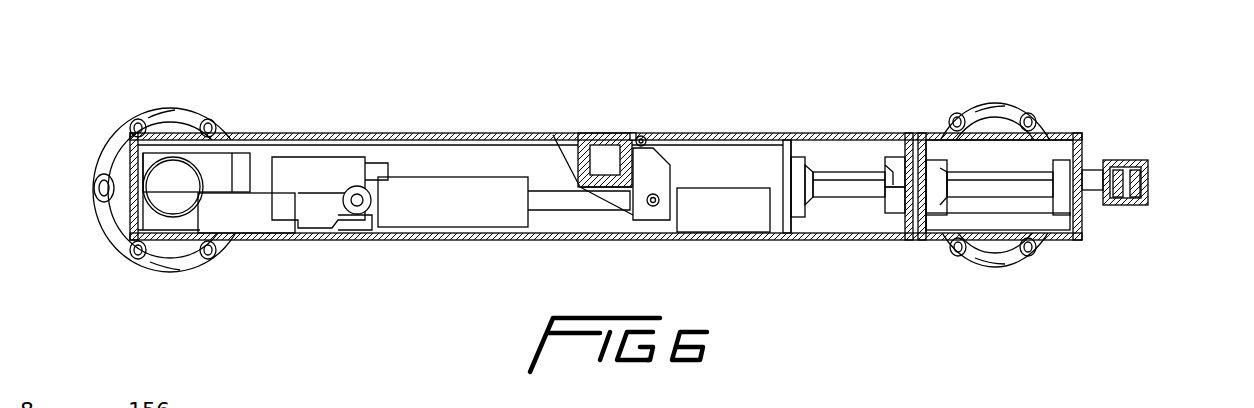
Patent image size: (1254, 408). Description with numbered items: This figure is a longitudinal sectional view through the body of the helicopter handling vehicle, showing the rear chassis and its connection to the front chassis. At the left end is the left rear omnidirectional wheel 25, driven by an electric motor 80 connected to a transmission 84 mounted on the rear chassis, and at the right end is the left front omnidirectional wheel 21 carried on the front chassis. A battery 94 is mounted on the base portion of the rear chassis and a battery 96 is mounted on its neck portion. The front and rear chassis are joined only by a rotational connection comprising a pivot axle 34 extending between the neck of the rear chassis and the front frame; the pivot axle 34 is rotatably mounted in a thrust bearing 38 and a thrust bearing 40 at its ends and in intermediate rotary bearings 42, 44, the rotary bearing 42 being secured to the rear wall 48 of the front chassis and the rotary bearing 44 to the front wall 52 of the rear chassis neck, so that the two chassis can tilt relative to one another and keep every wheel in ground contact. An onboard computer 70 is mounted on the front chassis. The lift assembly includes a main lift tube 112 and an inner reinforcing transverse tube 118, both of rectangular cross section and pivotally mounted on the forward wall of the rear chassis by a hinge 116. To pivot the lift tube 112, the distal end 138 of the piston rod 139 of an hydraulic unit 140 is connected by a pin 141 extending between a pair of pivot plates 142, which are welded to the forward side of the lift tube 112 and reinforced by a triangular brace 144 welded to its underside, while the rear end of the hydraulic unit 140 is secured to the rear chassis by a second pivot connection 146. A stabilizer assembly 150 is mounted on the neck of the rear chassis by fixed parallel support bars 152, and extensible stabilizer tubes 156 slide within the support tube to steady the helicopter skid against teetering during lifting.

The omnidirectional wheel 21 is at (1035, 102).
The omnidirectional wheel 25 is at (189, 101).
The pivot axle 34 is at (853, 215).
The thrust bearing 38 is at (1057, 168).
The thrust bearing 40 is at (808, 240).
The rotary bearing 42 is at (940, 240).
The rotary bearing 44 is at (897, 240).
The rear wall 48 is at (933, 137).
The front wall 52 is at (893, 137).
The onboard computer 70 is at (1062, 240).
The electric motor 80 is at (342, 157).
The transmission 84 is at (260, 158).
The battery 94 is at (282, 223).
The battery 96 is at (757, 240).
The main lift tube 112 is at (624, 134).
The hinge 116 is at (646, 136).
The inner reinforcing transverse tube 118 is at (600, 137).
The distal end 138 is at (656, 208).
The piston rod 139 is at (555, 137).
The hydraulic unit 140 is at (427, 177).
The pin 141 is at (673, 187).
The pivot plate 142 is at (660, 152).
The triangular brace 144 is at (608, 217).
The second pivot connection 146 is at (358, 220).
The stabilizer assembly 150 is at (1129, 210).
The support bar 152 is at (1088, 168).
The extensible stabilizer tube 156 is at (1121, 165).